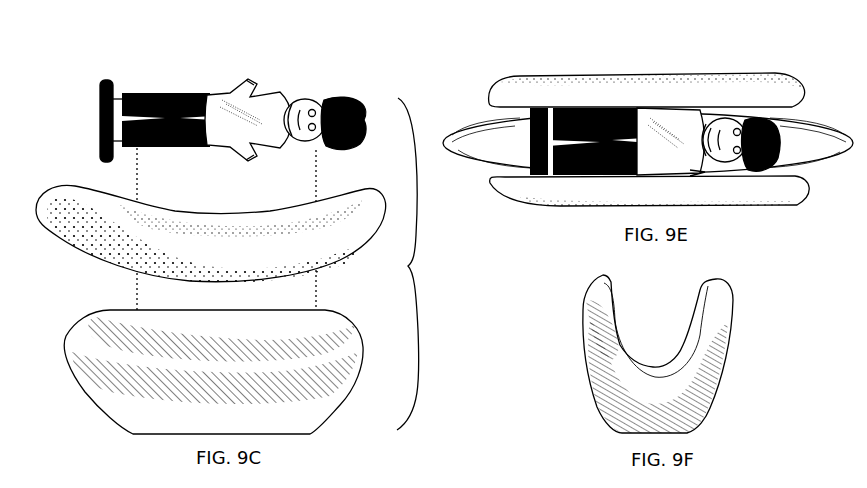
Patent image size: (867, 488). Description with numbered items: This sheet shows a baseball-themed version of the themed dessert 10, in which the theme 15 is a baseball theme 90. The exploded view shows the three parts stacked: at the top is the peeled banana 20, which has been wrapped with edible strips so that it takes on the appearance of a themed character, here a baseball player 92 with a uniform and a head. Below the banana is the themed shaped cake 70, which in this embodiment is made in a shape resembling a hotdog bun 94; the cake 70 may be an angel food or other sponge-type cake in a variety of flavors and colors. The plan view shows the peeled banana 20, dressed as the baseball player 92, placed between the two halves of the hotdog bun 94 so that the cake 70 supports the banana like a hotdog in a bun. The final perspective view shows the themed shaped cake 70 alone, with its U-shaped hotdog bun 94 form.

In FIG. 9C, the themed dessert 10 is at (118, 55).
In FIG. 9C, the baseball player 92 is at (190, 65).
In FIG. 9C, the theme 15 is at (265, 55).
In FIG. 9C, the peeled banana 20 is at (75, 175).
In FIG. 9E, the peeled banana 20 is at (482, 106).
In FIG. 9C, the hotdog bun 94 is at (72, 328).
In FIG. 9E, the hotdog bun 94 is at (592, 86).
In FIG. 9F, the hotdog bun 94 is at (712, 282).
In FIG. 9C, the baseball theme 90 is at (413, 266).
In FIG. 9E, the themed shaped cake 70 is at (700, 62).